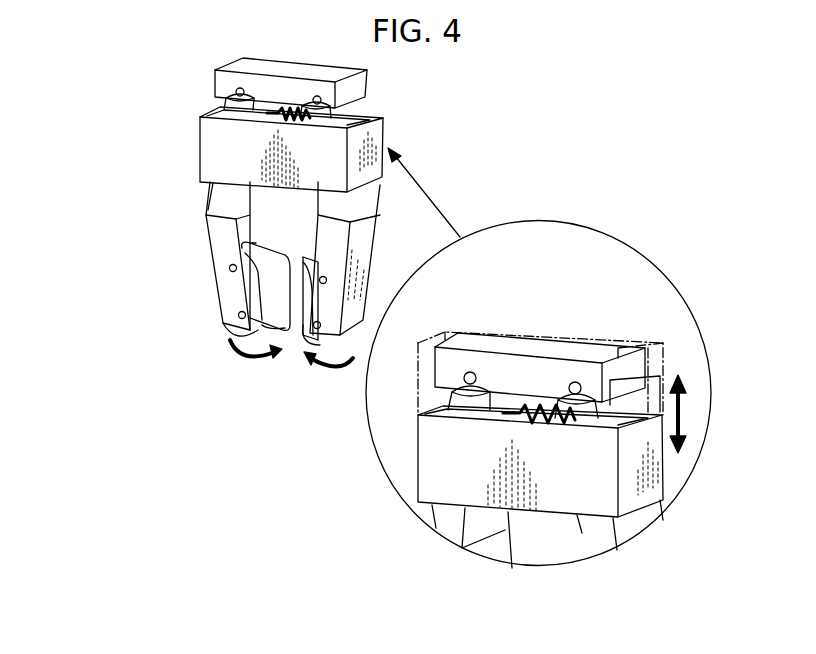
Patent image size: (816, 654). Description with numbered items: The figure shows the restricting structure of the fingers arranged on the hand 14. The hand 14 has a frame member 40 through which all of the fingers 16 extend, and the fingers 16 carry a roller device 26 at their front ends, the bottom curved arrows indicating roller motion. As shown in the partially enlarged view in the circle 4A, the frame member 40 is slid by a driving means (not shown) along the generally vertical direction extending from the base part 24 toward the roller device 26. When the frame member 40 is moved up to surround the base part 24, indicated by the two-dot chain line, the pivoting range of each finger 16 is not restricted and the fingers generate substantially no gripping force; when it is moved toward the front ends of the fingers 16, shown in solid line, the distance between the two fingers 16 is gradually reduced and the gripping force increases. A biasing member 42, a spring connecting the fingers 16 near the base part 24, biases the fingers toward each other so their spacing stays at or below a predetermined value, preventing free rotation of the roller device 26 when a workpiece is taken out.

The hand 14 is at (130, 108).
The base part 24 is at (355, 93).
The frame member 40 is at (222, 147).
The biasing member 42 is at (294, 122).
The finger 16 is at (225, 250).
The roller device 26 is at (295, 333).
The circle (partially enlarged view) 4A is at (566, 221).